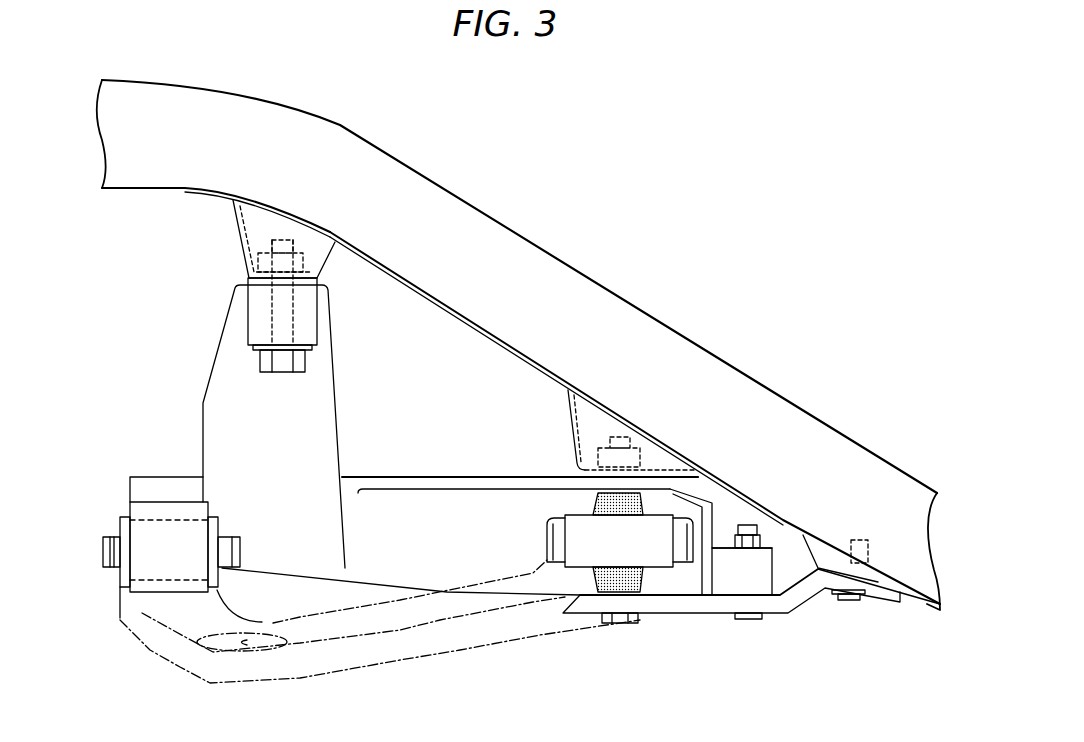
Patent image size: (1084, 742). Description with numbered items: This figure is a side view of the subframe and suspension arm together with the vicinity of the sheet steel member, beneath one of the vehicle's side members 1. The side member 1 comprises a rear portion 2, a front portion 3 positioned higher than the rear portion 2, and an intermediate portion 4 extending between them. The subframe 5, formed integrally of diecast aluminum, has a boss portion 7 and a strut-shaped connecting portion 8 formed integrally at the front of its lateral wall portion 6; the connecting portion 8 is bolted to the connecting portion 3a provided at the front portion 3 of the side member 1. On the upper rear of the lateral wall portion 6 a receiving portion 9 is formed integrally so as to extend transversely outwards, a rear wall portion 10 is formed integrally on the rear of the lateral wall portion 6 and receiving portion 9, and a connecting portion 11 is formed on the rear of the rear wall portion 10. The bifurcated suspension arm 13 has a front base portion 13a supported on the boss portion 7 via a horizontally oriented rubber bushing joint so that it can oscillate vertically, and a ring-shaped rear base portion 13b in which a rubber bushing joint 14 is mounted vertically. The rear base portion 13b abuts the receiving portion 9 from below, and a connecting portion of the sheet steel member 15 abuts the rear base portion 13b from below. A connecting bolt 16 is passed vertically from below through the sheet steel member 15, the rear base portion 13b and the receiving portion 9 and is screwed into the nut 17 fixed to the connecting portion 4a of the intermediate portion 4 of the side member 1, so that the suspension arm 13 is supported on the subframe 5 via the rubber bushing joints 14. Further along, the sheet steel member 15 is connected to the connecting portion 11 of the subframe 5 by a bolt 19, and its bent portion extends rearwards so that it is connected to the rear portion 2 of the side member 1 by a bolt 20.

The side member 1 is at (522, 232).
The rear portion 2 is at (923, 582).
The front portion 3 is at (137, 163).
The connecting portion 3a is at (255, 222).
The intermediate portion 4 is at (690, 362).
The connecting portion 4a is at (600, 418).
The subframe 5 is at (433, 468).
The lateral wall portion 6 is at (398, 562).
The boss portion 7 is at (175, 505).
The connecting portion 8 is at (255, 318).
The receiving portion 9 is at (557, 478).
The rear wall portion 10 is at (720, 522).
The connecting portion 11 is at (768, 560).
The suspension arm 13 is at (462, 652).
The front base portion 13a is at (118, 520).
The rear base portion 13b is at (547, 540).
The rubber bushing joint 14 is at (657, 558).
The sheet steel member 15 is at (788, 610).
The connecting bolt 16 is at (604, 627).
The nut 17 is at (648, 447).
The bolt 19 is at (750, 618).
The bolt 20 is at (848, 600).